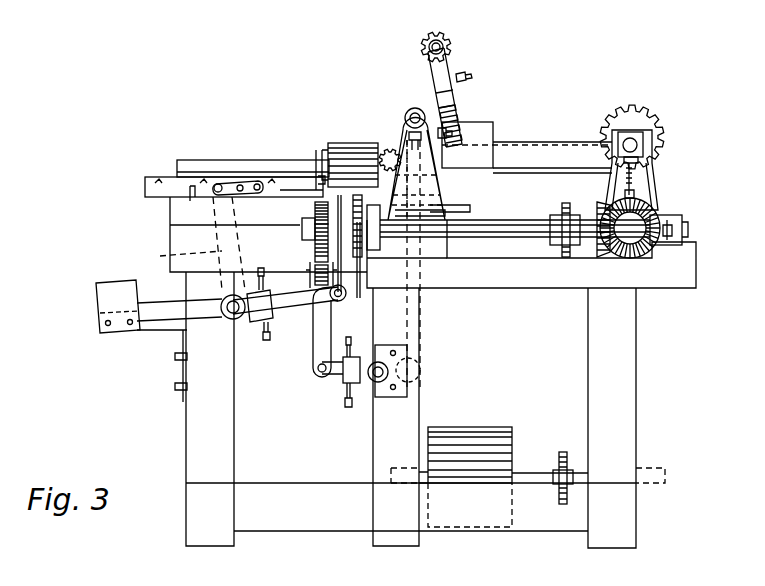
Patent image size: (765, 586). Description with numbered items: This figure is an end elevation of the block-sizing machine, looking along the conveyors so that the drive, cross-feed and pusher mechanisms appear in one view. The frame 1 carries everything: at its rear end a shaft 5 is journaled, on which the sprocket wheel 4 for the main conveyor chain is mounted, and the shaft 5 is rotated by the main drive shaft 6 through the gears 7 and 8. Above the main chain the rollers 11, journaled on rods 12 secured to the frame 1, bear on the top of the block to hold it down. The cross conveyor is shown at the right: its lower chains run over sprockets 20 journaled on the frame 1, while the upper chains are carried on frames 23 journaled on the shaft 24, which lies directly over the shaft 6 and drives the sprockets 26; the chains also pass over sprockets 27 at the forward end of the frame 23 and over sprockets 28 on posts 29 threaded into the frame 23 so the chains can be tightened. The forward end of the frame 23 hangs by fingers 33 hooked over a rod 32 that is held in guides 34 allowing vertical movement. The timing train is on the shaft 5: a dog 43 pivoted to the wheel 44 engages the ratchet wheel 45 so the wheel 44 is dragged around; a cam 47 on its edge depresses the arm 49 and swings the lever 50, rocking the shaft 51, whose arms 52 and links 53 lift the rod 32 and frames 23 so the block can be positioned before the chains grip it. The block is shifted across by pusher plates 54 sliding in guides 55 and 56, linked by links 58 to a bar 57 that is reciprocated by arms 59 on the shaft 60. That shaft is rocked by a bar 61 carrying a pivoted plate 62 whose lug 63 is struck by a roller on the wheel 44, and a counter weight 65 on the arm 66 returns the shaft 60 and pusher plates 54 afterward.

The frame 1 is at (378, 412).
The sprocket wheel 4 is at (352, 255).
The shaft 5 is at (525, 228).
The main drive shaft 6 is at (660, 214).
The gear 7 is at (642, 208).
The gear 8 is at (603, 250).
The roller 11 is at (350, 143).
The rod 12 is at (250, 165).
The sprocket 20 is at (425, 183).
The frame 23 is at (527, 147).
The shaft 24 is at (637, 145).
The sprocket 26 is at (640, 120).
The sprocket 27 is at (390, 150).
The sprocket 28 is at (450, 44).
The post 29 is at (455, 110).
The rod 32 is at (415, 108).
The finger 33 is at (460, 125).
The guide 34 is at (432, 160).
The dog 43 is at (314, 210).
The wheel 44 is at (305, 236).
The ratchet wheel 45 is at (314, 250).
The cam 47 is at (313, 275).
The arm 49 is at (318, 348).
The lever 50 is at (338, 375).
The shaft 51 is at (365, 380).
The arm 52 is at (412, 384).
The link 53 is at (420, 325).
The pusher plate 54 is at (155, 182).
The guide 55 is at (188, 200).
The guide 56 is at (316, 150).
The bar 57 is at (217, 184).
The link 58 is at (236, 182).
The arm 59 is at (172, 255).
The shaft 60 is at (236, 315).
The bar 61 is at (295, 306).
The plate 62 is at (338, 301).
The lug 63 is at (337, 243).
The counter weight 65 is at (103, 298).
The arm 66 is at (162, 312).